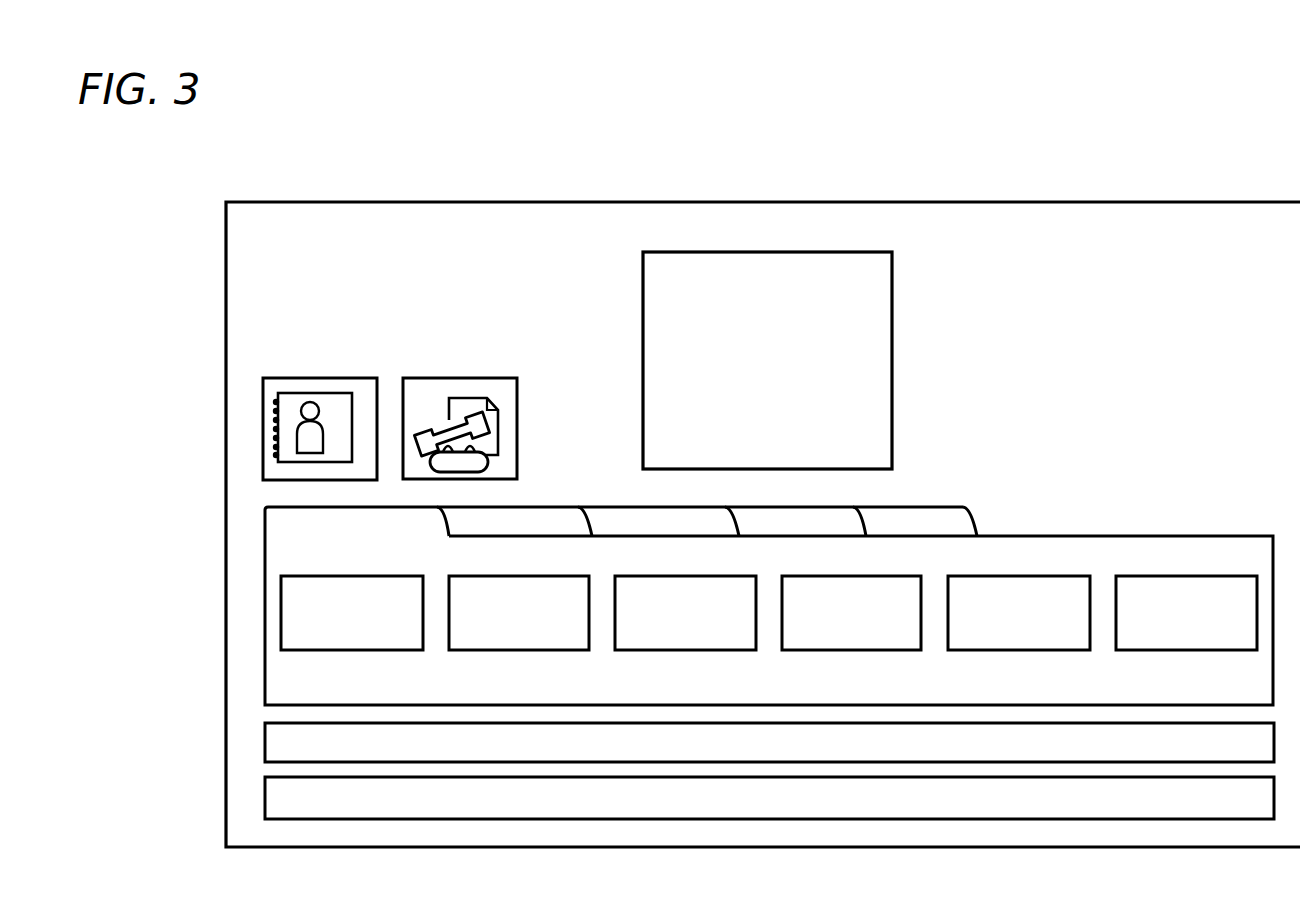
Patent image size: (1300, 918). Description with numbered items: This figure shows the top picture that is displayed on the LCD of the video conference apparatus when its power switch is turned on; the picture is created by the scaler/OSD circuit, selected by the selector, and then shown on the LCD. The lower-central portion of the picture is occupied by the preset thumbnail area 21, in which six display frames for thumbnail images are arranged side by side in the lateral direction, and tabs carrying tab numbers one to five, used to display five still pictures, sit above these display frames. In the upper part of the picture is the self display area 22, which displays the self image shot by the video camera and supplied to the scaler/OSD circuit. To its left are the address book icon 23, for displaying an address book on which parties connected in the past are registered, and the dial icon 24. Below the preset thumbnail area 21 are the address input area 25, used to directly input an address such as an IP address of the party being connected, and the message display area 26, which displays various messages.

The preset thumbnail area 21 is at (253, 502).
The self display area 22 is at (783, 252).
The address book icon 23 is at (313, 378).
The dial icon 24 is at (480, 378).
The address input area 25 is at (265, 746).
The message display area 26 is at (265, 802).